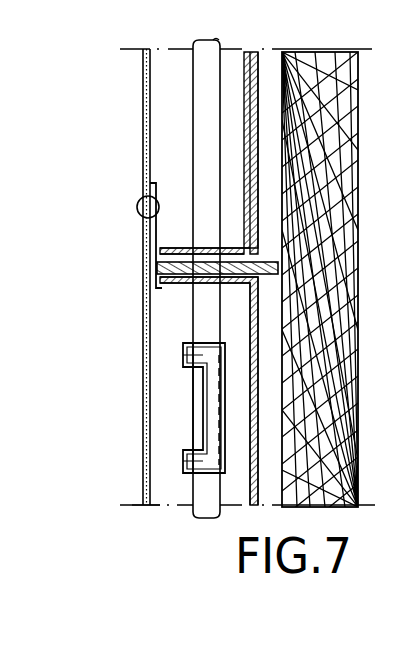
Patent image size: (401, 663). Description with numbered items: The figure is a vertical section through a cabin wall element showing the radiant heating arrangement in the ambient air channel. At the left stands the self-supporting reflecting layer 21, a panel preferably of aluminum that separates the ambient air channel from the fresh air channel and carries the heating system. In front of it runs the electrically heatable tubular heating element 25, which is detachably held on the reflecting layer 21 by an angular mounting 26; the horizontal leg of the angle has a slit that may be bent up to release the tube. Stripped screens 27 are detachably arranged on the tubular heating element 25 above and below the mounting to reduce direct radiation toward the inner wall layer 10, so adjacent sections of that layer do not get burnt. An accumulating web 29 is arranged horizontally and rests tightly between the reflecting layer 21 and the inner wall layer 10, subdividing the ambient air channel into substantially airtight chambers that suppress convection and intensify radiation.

The inner wall layer 10 is at (320, 412).
The reflecting layer 21 is at (145, 119).
The tubular heating element 25 is at (205, 95).
The angular mounting 26 is at (160, 268).
The stripped screen 27 is at (255, 150).
The accumulating web 29 is at (152, 264).